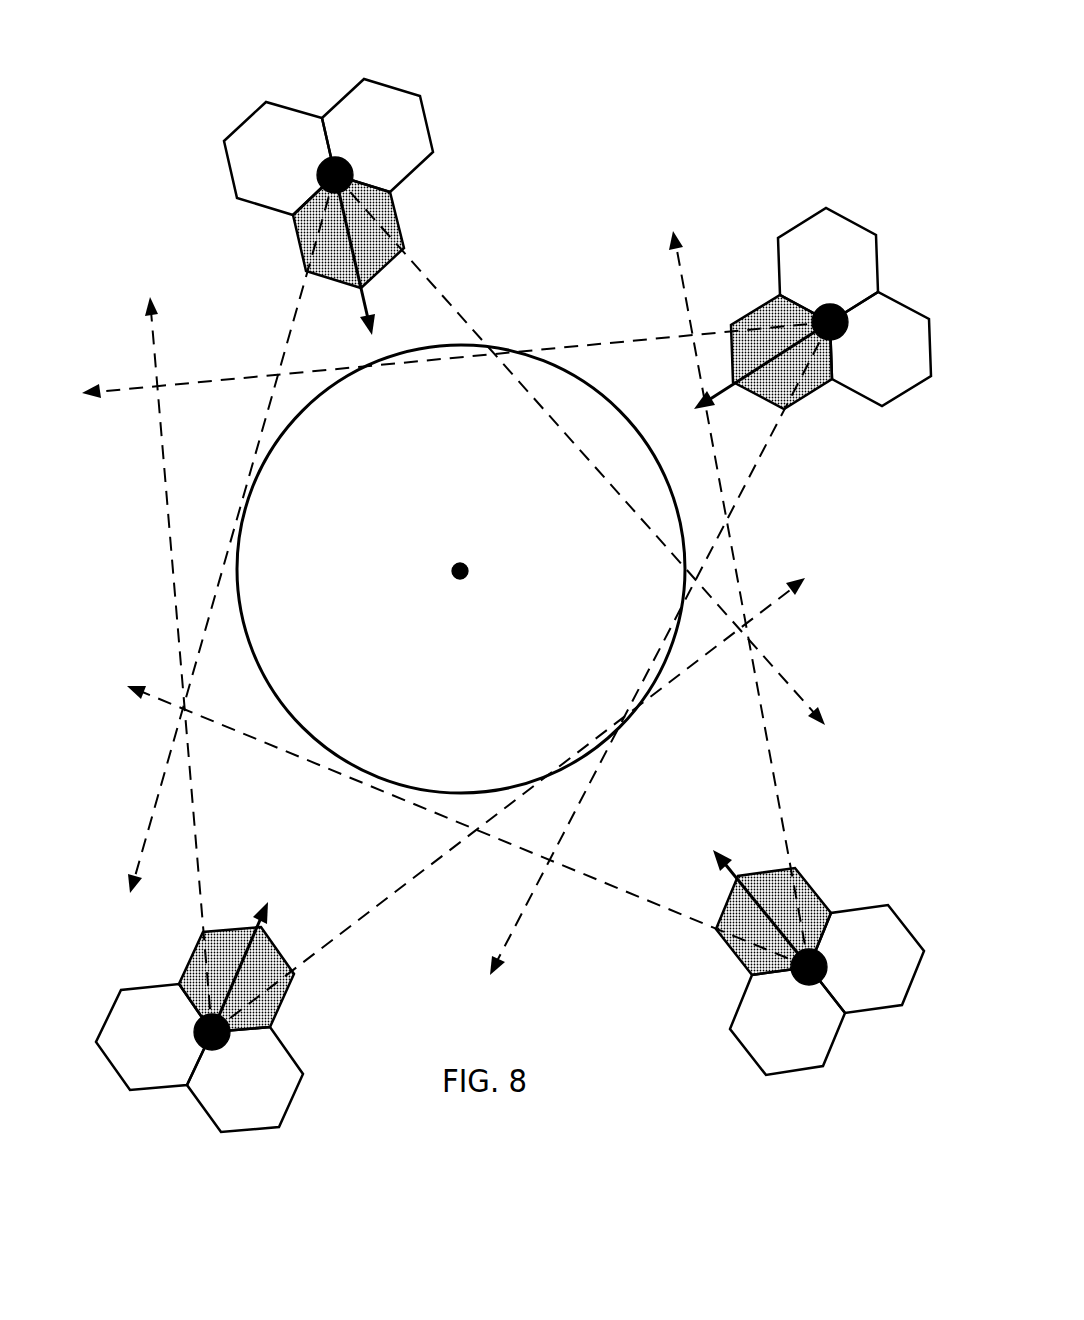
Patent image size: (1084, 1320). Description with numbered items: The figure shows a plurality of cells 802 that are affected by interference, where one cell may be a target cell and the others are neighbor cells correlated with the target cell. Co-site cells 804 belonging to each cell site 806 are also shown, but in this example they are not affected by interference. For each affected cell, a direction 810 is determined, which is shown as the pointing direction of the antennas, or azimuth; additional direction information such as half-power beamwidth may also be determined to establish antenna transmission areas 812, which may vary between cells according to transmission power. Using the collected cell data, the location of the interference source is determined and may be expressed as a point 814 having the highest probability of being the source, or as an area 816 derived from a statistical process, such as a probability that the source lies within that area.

The cells affected by interference 802 is at (292, 262).
The co-site cells 804 is at (125, 1090).
The cell site 806 is at (220, 1048).
The direction 810 is at (278, 903).
The antenna transmission areas 812 is at (204, 868).
The point 814 is at (465, 578).
The area 816 is at (298, 702).